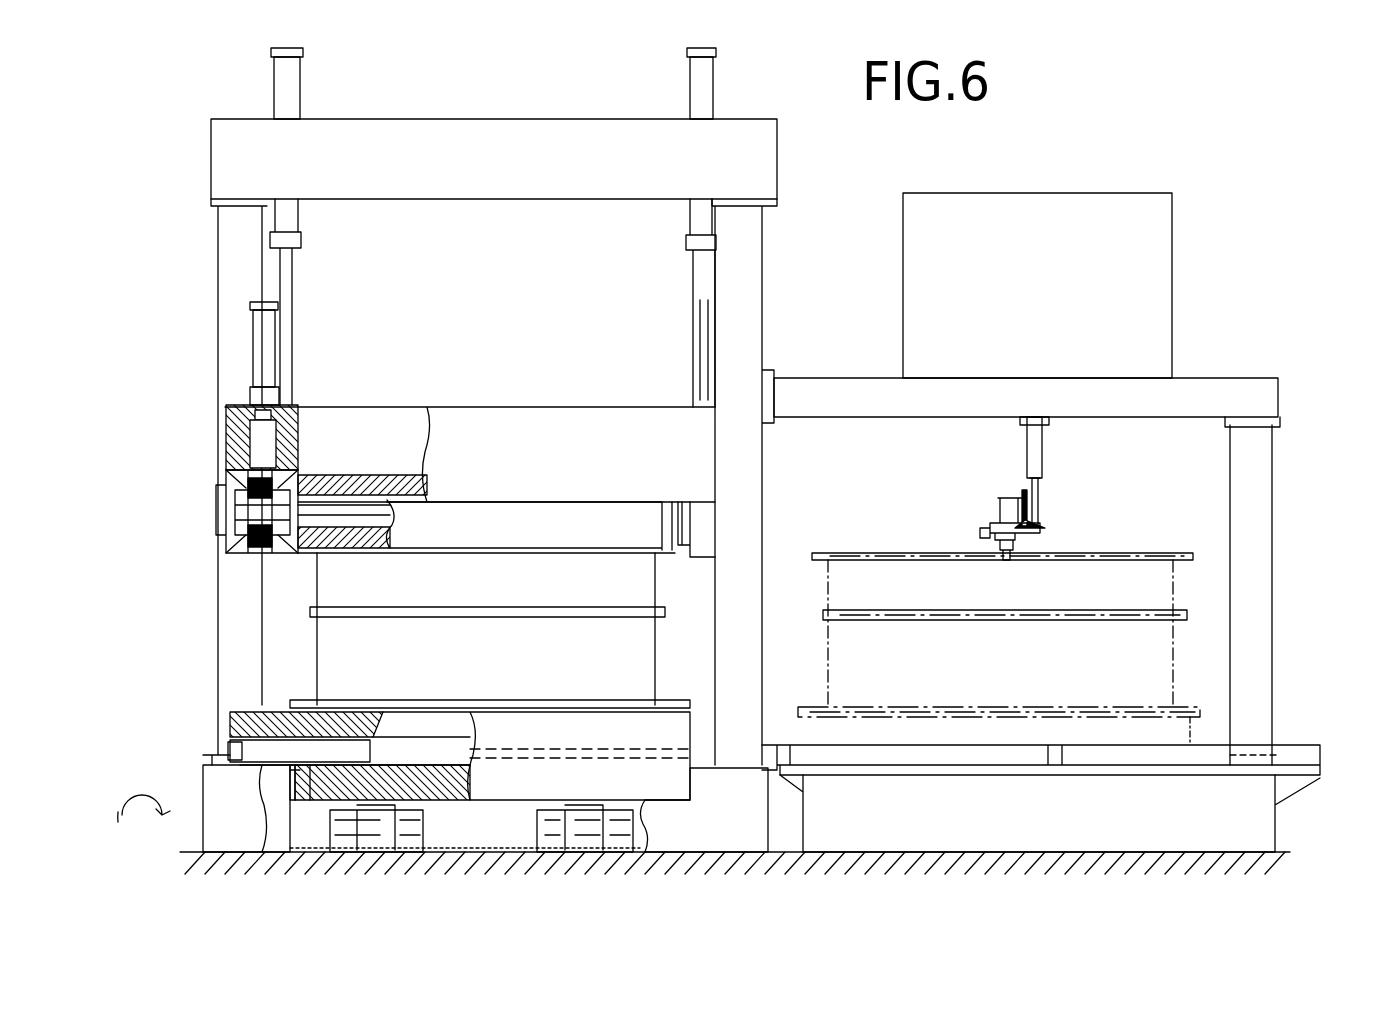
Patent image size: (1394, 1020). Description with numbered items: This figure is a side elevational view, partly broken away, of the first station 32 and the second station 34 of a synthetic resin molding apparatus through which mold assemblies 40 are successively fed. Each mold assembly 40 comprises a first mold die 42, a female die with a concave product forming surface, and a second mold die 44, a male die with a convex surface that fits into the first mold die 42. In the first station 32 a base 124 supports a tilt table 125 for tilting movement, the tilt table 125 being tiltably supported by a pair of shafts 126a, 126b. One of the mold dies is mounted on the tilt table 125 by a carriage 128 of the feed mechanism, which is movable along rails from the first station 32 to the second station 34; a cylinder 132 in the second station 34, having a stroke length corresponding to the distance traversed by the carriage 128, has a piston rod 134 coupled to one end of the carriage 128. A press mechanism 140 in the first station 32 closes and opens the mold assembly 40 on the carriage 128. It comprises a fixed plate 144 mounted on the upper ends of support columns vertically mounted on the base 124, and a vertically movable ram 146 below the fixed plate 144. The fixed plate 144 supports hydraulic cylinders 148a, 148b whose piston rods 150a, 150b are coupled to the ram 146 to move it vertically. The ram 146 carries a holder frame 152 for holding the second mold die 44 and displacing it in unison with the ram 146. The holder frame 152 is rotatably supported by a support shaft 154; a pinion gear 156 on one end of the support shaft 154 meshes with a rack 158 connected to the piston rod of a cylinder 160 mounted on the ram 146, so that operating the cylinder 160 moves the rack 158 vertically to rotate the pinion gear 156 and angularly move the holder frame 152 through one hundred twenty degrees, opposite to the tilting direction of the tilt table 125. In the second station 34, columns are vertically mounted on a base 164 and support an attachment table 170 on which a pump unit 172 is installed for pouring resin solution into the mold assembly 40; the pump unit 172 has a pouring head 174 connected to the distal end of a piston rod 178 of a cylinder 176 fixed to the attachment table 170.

The first station 32 is at (180, 290).
The second station 34 is at (1232, 298).
The mold assembly 40 is at (740, 649).
The first mold die 42 is at (330, 665).
The second mold die 44 is at (330, 583).
The base 124 is at (206, 800).
The tilt table 125 is at (678, 785).
The shaft 126a is at (410, 826).
The shaft 126b is at (549, 810).
The carriage 128 is at (356, 726).
The cylinder 132 is at (974, 760).
The piston rod 134 is at (264, 760).
The press mechanism 140 is at (509, 406).
The fixed plate 144 is at (540, 180).
The ram 146 is at (436, 465).
The hydraulic cylinder 148a is at (290, 88).
The hydraulic cylinder 148b is at (690, 95).
The piston rod 150a is at (286, 310).
The piston rod 150b is at (695, 325).
The holder frame 152 is at (544, 528).
The support shaft 154 is at (336, 507).
The pinion gear 156 is at (246, 555).
The rack 158 is at (255, 453).
The cylinder 160 is at (268, 359).
The base 164 is at (1252, 829).
The attachment table 170 is at (1145, 400).
The pump unit 172 is at (1172, 255).
The pouring head 174 is at (993, 513).
The cylinder 176 is at (1040, 455).
The piston rod 178 is at (1040, 520).